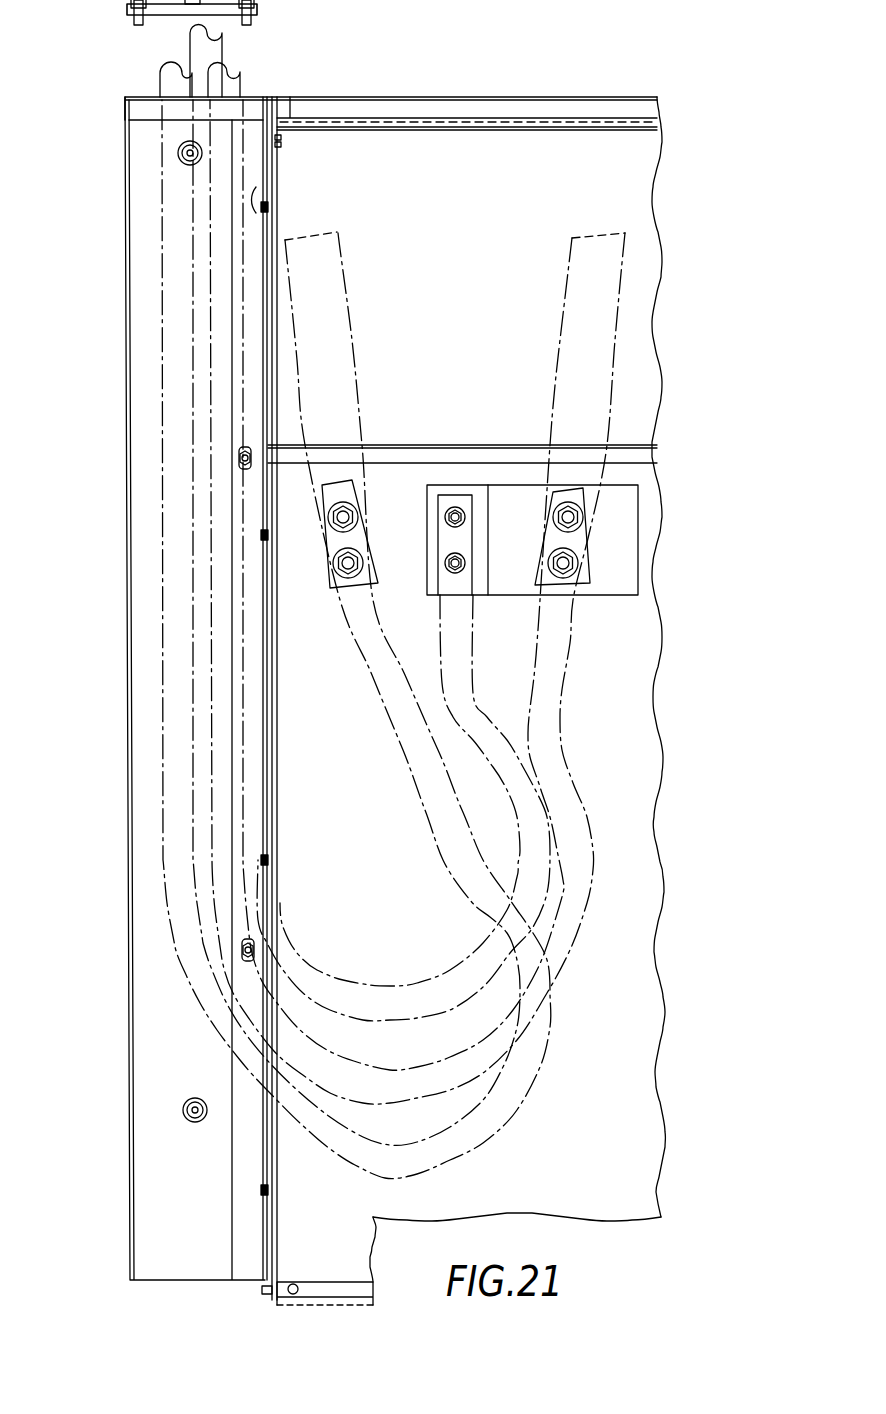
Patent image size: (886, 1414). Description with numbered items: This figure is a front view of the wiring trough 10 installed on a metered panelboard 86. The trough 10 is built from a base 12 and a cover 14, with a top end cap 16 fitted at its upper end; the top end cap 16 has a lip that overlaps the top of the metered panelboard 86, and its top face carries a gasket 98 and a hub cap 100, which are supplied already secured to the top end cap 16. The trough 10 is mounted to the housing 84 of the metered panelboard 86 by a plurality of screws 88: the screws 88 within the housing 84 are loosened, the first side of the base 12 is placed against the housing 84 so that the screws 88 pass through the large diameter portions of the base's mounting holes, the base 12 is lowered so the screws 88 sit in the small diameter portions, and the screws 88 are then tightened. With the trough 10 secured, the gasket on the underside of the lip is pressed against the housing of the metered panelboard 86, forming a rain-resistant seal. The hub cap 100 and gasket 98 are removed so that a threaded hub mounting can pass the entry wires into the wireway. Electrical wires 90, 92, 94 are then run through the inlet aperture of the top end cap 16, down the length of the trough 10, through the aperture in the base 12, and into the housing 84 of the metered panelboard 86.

The wiring trough 10 is at (490, 80).
The base 12 is at (268, 196).
The cover 14 is at (142, 223).
The top end cap 16 is at (142, 108).
The housing 84 is at (672, 152).
The metered panelboard 86 is at (693, 237).
The screws 88 is at (274, 207).
The electrical wire 90 is at (557, 660).
The electrical wire 92 is at (380, 663).
The electrical wire 94 is at (467, 667).
The gasket 98 is at (258, 16).
The hub cap 100 is at (127, 7).